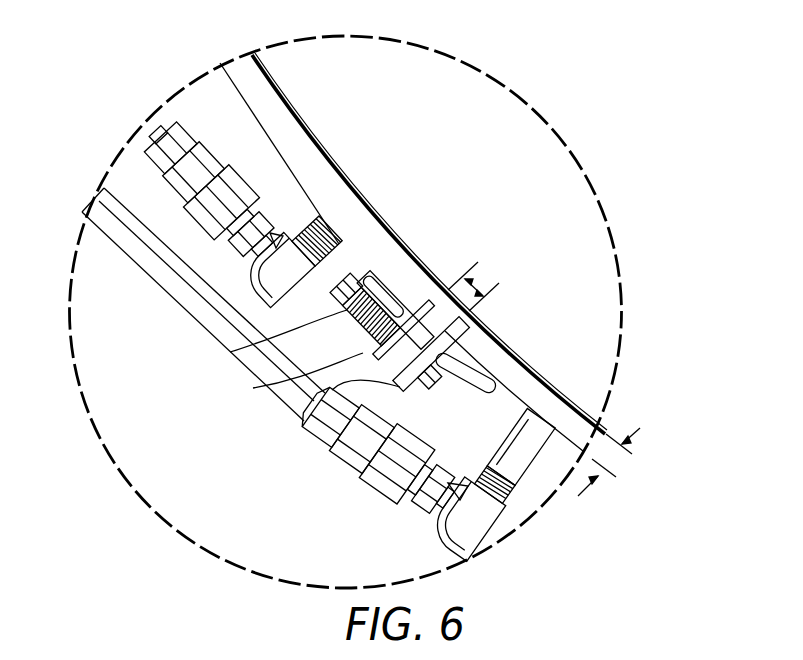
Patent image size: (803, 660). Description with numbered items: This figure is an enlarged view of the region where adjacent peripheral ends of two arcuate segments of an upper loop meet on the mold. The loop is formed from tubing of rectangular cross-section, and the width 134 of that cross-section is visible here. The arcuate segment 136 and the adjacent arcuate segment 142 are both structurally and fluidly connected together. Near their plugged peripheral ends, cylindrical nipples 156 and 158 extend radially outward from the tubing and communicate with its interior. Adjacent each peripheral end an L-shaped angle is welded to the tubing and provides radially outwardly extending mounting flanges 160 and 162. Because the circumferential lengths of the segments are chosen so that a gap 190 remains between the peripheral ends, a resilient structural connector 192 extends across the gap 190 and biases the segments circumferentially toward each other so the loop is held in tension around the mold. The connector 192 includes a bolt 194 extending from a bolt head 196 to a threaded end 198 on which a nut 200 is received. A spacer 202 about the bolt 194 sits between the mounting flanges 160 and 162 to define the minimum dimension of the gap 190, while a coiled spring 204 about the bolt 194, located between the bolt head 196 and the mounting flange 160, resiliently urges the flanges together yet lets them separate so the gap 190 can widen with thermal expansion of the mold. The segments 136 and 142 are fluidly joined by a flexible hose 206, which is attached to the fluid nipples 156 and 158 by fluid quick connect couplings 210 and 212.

The width 134 is at (640, 428).
The arcuate segment 136 is at (500, 370).
The arcuate segment 142 is at (240, 64).
The cylindrical nipple 156 is at (298, 205).
The cylindrical nipple 158 is at (522, 483).
The mounting flange 160 is at (289, 358).
The mounting flange 162 is at (305, 410).
The gap 190 is at (483, 290).
The resilient structural connector 192 is at (365, 270).
The bolt 194 is at (345, 278).
The bolt head 196 is at (345, 278).
The threaded end 198 is at (434, 384).
The nut 200 is at (172, 300).
The spacer 202 is at (447, 320).
The coiled spring 204 is at (273, 343).
The flexible hose 206 is at (160, 120).
The fluid quick connect coupling 210 is at (388, 506).
The fluid quick connect coupling 212 is at (170, 182).